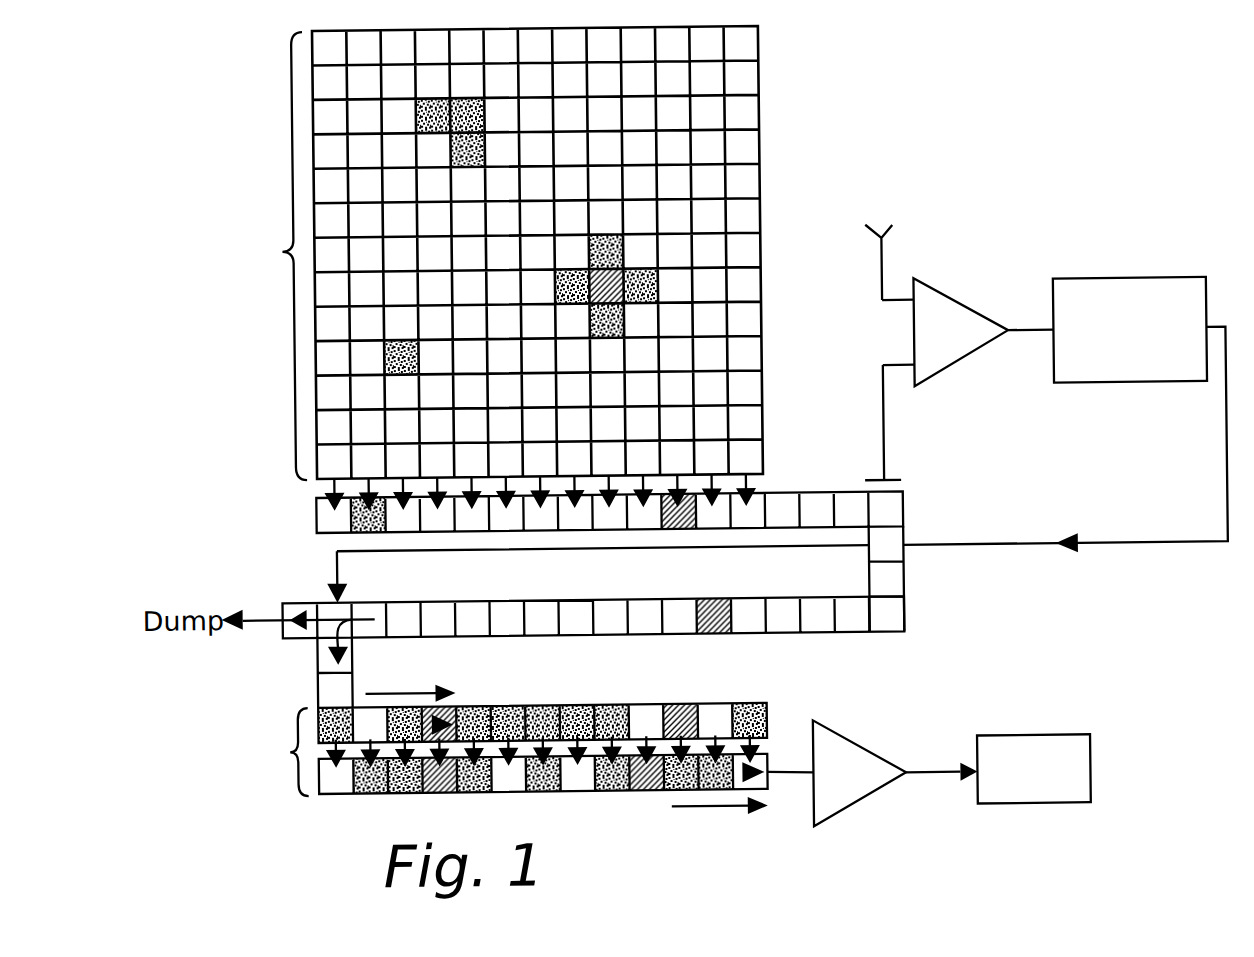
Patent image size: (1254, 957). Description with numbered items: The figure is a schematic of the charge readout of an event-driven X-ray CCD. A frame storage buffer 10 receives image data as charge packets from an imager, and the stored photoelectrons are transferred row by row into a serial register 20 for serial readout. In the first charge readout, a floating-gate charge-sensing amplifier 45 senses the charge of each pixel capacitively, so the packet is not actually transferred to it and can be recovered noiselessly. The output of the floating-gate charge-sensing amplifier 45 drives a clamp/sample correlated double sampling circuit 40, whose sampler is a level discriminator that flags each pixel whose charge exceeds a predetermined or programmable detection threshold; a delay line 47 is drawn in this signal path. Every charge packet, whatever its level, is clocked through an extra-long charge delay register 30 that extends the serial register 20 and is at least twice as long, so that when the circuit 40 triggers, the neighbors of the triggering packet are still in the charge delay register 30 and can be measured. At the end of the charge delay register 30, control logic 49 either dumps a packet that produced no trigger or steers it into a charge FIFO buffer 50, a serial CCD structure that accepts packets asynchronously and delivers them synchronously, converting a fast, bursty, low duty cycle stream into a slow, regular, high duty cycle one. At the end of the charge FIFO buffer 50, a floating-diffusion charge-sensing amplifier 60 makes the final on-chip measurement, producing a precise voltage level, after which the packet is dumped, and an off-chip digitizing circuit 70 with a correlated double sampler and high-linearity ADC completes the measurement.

The frame storage buffer 10 is at (505, 253).
The serial register 20 is at (752, 533).
The charge delay register 30 is at (898, 639).
The clamp/sample correlated double sampling circuit 40 is at (959, 306).
The floating-gate charge-sensing amplifier 45 is at (893, 486).
The delay line 47 is at (1125, 287).
The control logic 49 is at (340, 603).
The charge FIFO buffer 50 is at (300, 710).
The floating-diffusion charge-sensing amplifier 60 is at (849, 804).
The digitizing circuit 70 is at (1036, 811).